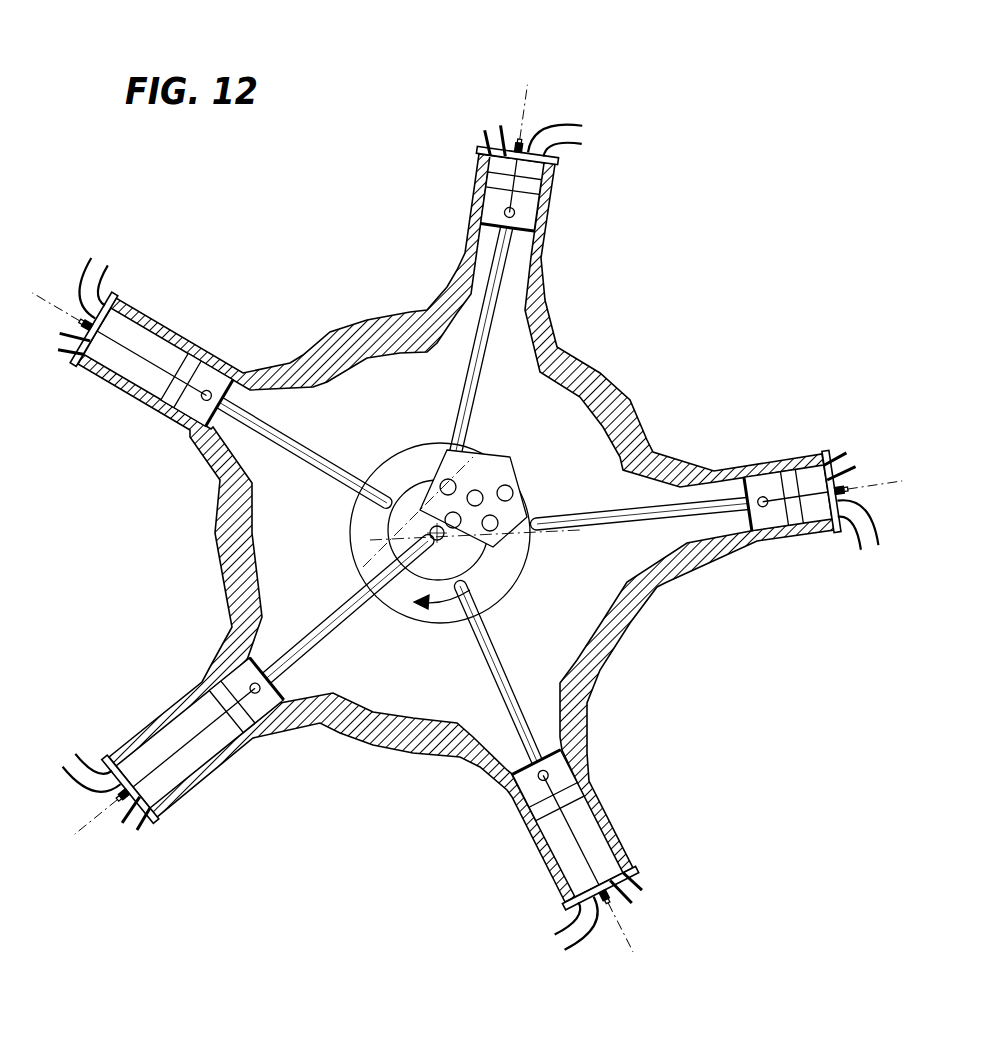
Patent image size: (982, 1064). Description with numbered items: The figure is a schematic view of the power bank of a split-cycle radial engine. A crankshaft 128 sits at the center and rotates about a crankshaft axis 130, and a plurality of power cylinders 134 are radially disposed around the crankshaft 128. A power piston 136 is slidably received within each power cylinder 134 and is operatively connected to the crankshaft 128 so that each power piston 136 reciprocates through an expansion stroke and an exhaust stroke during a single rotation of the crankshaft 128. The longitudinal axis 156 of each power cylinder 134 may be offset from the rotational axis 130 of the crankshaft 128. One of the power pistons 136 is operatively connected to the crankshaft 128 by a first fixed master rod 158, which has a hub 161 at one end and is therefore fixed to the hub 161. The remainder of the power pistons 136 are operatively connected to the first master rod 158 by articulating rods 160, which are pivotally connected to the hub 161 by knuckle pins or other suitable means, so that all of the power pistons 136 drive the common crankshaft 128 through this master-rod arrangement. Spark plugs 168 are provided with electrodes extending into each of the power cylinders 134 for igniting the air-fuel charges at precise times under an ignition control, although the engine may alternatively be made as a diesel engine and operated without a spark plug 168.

The crankshaft 128 is at (472, 455).
The crankshaft axis 130 is at (400, 600).
The power cylinder 134 is at (545, 192).
The power piston 136 is at (546, 240).
The longitudinal axis 156 is at (528, 102).
The first fixed master rod 158 is at (500, 422).
The articulating rod 160 is at (340, 440).
The hub 161 is at (503, 458).
The spark plug 168 is at (545, 148).